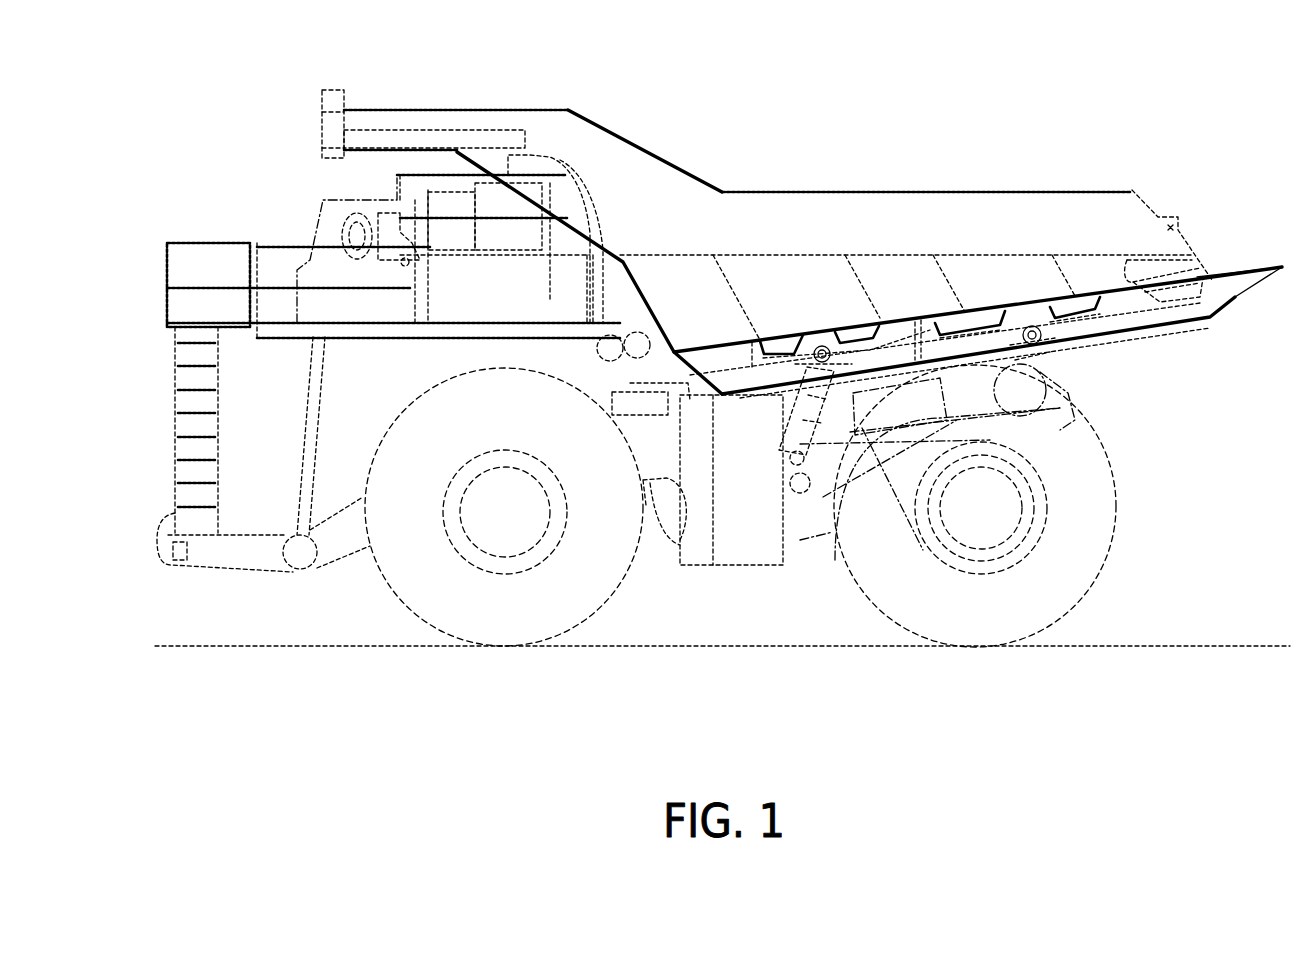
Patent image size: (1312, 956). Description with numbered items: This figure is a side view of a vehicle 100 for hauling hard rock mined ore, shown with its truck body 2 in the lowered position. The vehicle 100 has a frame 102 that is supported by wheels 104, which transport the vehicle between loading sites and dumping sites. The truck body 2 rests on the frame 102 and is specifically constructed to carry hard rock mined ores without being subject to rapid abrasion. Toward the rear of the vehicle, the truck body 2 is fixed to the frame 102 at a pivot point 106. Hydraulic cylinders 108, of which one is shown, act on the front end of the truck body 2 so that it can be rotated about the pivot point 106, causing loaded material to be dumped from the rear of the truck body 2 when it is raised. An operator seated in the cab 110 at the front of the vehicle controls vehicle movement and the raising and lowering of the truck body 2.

The truck body 2 is at (824, 150).
The vehicle 100 is at (274, 206).
The frame 102 is at (1068, 393).
The wheels 104 is at (597, 557).
The pivot point 106 is at (1050, 337).
The hydraulic cylinders 108 is at (799, 425).
The cab 110 is at (468, 292).